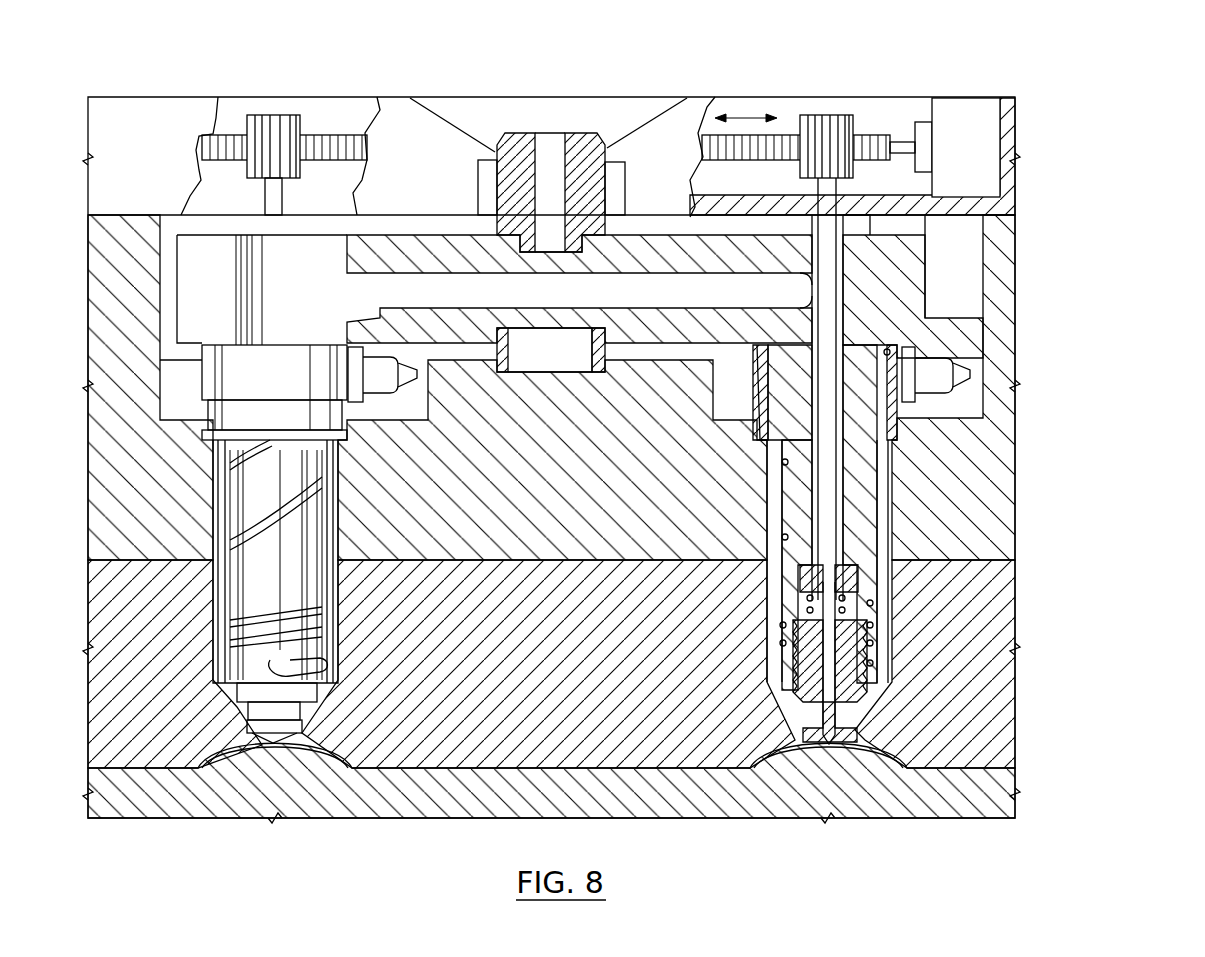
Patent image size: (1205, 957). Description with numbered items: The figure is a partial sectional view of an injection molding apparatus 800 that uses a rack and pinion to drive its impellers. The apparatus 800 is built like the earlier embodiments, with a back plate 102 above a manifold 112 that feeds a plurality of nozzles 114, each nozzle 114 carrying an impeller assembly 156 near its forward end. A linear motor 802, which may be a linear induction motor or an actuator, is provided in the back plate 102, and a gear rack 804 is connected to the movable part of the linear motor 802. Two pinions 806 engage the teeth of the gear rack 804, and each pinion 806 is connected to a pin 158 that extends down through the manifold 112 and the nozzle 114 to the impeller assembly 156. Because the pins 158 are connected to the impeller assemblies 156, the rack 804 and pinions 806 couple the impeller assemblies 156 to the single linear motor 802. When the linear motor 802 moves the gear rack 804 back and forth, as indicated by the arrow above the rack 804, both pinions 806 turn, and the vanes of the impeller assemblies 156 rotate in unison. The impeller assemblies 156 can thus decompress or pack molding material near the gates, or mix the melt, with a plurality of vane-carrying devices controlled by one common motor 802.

The injection molding apparatus 800 is at (1052, 89).
The linear motor 802 is at (987, 163).
The gear rack 804 is at (874, 133).
The pinions 806 is at (270, 113).
The back plate 102 is at (1016, 185).
The manifold 112 is at (923, 313).
The nozzles 114 is at (883, 517).
The impeller assembly 156 is at (860, 585).
The pin 158 is at (285, 197).